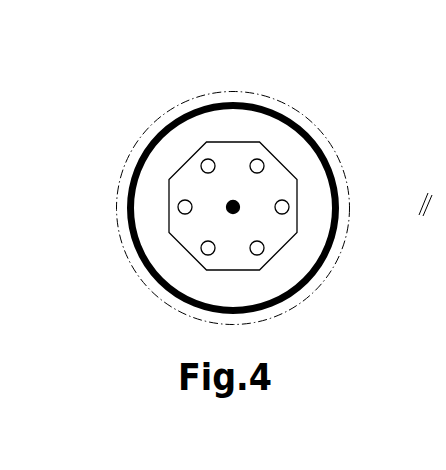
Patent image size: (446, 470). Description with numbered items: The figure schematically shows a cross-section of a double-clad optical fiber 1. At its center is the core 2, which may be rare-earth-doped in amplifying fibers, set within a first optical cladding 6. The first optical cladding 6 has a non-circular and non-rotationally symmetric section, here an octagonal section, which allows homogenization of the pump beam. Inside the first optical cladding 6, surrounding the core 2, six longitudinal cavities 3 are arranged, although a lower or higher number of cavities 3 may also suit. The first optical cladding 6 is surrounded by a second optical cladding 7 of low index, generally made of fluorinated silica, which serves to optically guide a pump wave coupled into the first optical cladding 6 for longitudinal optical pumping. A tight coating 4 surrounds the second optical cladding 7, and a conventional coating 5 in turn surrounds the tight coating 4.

The optical fiber 1 is at (78, 183).
The core 2 is at (227, 209).
The longitudinal cavities 3 is at (285, 213).
The tight coating 4 is at (320, 268).
The conventional coating 5 is at (153, 108).
The first optical cladding 6 is at (272, 179).
The second optical cladding 7 is at (235, 120).